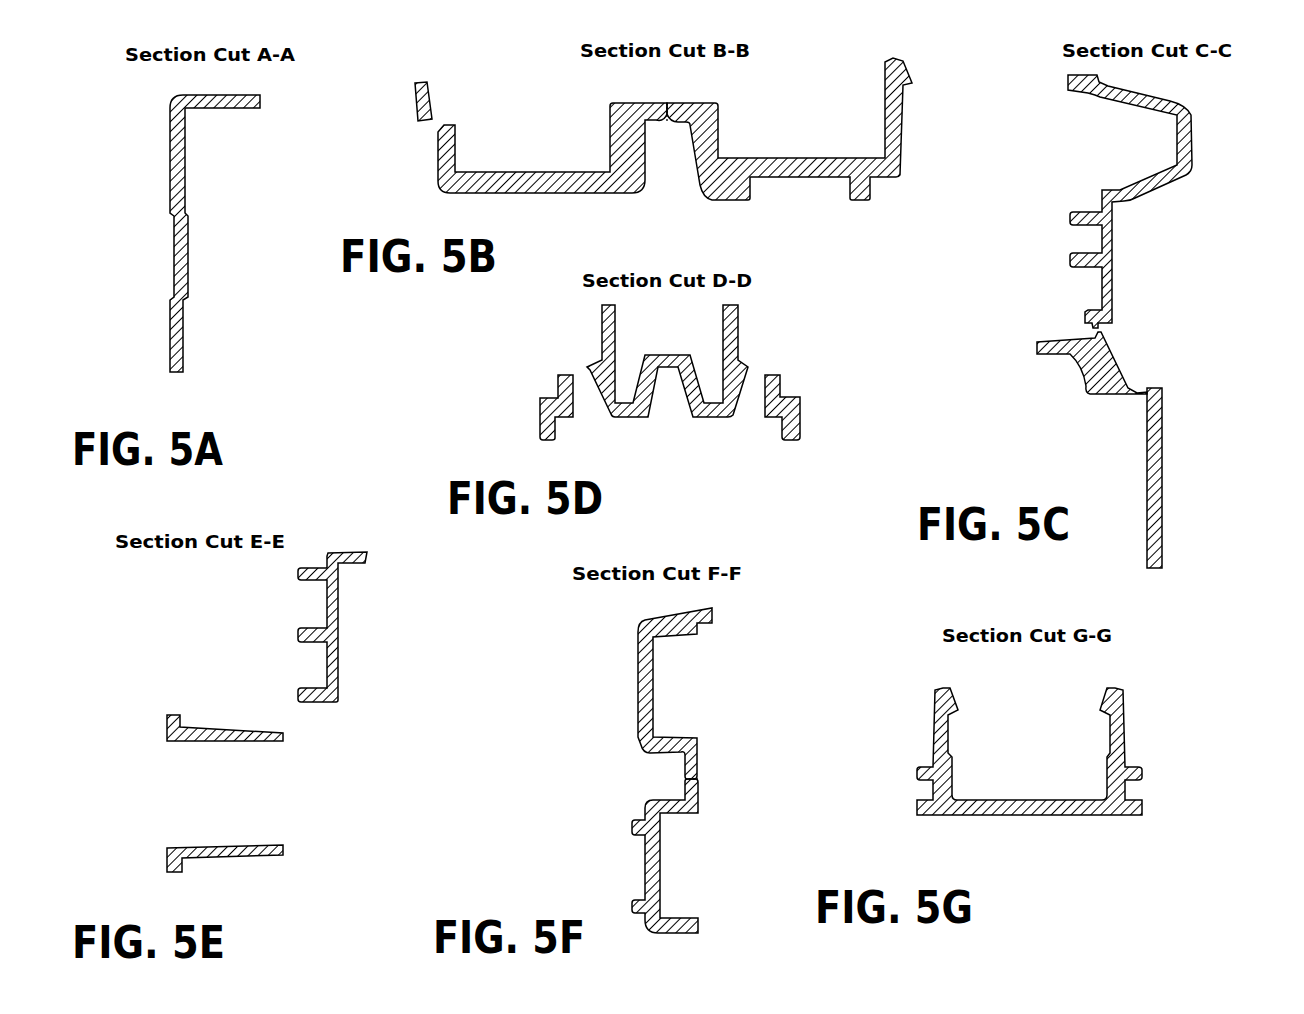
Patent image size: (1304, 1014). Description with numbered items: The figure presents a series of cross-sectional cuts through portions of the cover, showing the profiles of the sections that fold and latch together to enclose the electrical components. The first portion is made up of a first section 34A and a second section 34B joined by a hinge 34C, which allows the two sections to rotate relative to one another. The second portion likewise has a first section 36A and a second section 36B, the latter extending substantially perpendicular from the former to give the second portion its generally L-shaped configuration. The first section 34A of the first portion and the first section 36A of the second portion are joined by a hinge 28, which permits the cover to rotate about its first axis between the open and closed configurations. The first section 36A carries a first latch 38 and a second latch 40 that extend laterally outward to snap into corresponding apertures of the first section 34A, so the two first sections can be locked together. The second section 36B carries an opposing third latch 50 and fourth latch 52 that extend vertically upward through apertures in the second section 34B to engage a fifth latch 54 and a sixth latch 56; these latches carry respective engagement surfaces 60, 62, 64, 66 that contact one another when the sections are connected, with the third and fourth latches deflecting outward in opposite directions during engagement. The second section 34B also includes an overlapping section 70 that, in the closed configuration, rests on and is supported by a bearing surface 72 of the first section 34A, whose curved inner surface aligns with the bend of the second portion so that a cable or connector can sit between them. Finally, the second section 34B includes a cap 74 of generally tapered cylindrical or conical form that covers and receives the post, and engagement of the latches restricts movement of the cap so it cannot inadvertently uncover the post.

In FIG. 5B, the hinge 28 is at (665, 104).
In FIG. 5F, the hinge 28 is at (699, 778).
In FIG. 5B, the first section of the first portion 34A is at (506, 116).
In FIG. 5C, the first section of the first portion 34A is at (1194, 472).
In FIG. 5F, the first section of the first portion 34A is at (691, 665).
In FIG. 5C, the second section of the first portion 34B is at (1220, 166).
In FIG. 5D, the second section of the first portion 34B is at (803, 371).
In FIG. 5E, the second section of the first portion 34B is at (338, 545).
In FIG. 5C, the hinge 34C is at (1098, 330).
In FIG. 5B, the first section of the second portion 36A is at (789, 105).
In FIG. 5F, the first section of the second portion 36A is at (710, 873).
In FIG. 5A, the second section of the second portion 36B is at (143, 170).
In FIG. 5G, the second section of the second portion 36B is at (1176, 751).
In FIG. 5B, the first latch 38 is at (939, 118).
In FIG. 5B, the second latch 40 is at (908, 62).
In FIG. 5G, the third latch 50 is at (943, 688).
In FIG. 5G, the fourth latch 52 is at (1112, 688).
In FIG. 5D, the fifth latch 54 is at (602, 330).
In FIG. 5D, the sixth latch 56 is at (740, 318).
In FIG. 5G, the engagement surface 60 is at (955, 712).
In FIG. 5G, the engagement surface 62 is at (1100, 712).
In FIG. 5D, the engagement surface 64 is at (591, 364).
In FIG. 5D, the engagement surface 66 is at (746, 365).
In FIG. 5C, the overlapping section 70 is at (1127, 286).
In FIG. 5C, the bearing surface 72 is at (1057, 336).
In FIG. 5C, the cap 74 is at (1192, 135).